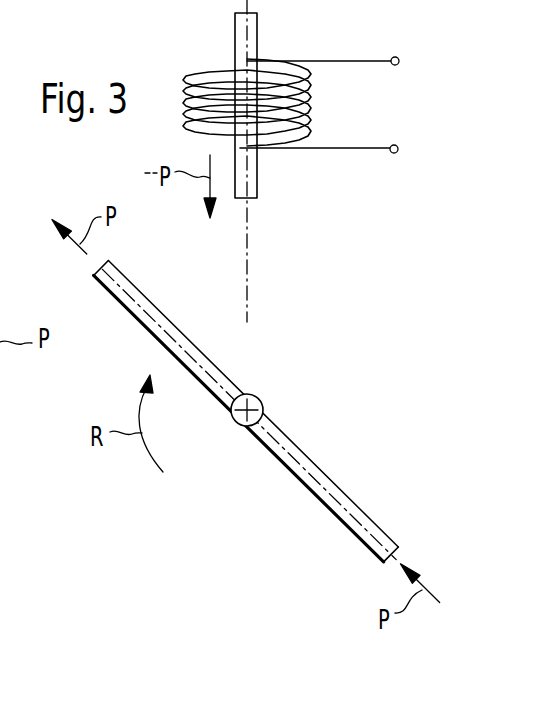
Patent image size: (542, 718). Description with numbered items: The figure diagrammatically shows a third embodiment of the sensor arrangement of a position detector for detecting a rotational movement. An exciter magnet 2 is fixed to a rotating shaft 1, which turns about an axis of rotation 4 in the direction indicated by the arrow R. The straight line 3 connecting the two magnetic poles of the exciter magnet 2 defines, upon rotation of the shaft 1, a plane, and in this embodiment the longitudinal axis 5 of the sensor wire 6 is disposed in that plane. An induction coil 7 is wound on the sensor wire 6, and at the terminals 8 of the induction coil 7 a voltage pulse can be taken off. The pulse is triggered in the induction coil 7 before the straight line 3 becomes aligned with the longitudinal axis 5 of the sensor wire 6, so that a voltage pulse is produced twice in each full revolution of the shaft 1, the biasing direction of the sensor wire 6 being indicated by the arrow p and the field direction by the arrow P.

The rotating shaft 1 is at (269, 386).
The exciter magnet 2 is at (269, 386).
The straight line connecting the magnetic poles 3 is at (332, 492).
The axis of rotation 4 is at (257, 400).
The longitudinal axis of the sensor wire 5 is at (247, 248).
The sensor wire 6 is at (257, 30).
The induction coil 7 is at (313, 104).
The terminals 8 is at (398, 57).